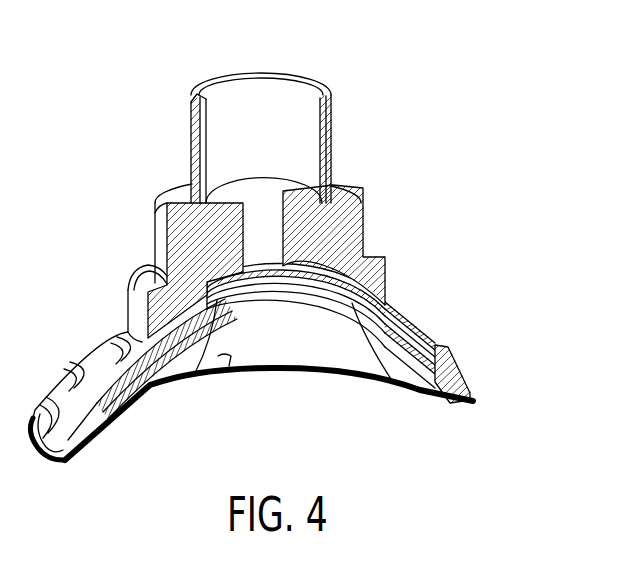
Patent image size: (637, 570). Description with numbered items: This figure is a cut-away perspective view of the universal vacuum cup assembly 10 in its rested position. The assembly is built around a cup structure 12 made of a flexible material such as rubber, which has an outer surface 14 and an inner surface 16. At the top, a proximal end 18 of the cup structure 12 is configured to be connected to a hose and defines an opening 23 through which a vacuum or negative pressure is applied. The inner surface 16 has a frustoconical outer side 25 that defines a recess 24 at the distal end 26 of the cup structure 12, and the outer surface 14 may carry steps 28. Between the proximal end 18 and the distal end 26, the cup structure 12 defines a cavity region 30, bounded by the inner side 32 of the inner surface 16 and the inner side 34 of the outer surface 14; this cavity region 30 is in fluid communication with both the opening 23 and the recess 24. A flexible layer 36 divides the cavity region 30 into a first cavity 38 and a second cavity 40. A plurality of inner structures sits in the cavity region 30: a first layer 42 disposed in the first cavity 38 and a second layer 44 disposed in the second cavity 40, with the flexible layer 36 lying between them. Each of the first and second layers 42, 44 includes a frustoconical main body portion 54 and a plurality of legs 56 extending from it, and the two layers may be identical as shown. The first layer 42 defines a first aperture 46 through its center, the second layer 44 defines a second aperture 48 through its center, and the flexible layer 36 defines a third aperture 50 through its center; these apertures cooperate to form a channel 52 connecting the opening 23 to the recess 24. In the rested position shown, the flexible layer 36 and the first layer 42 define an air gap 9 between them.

The vacuum cup assembly 10 is at (535, 323).
The cup structure 12 is at (397, 188).
The outer surface 14 is at (425, 337).
The inner surface 16 is at (372, 362).
The proximal end 18 is at (330, 107).
The opening 23 is at (258, 100).
The recess 24 is at (224, 364).
The outer side 25 is at (252, 337).
The distal end 26 is at (333, 393).
The steps 28 is at (135, 258).
The cavity region 30 is at (463, 380).
The inner side 32 is at (397, 315).
The inner side 34 is at (340, 293).
The flexible layer 36 is at (322, 262).
The first cavity 38 is at (362, 256).
The second cavity 40 is at (160, 380).
The first layer 42 is at (382, 307).
The second layer 44 is at (407, 323).
The first aperture 46 is at (268, 262).
The second aperture 48 is at (203, 357).
The third aperture 50 is at (290, 250).
The channel 52 is at (252, 292).
The frustoconical main body portion 54 is at (362, 407).
The legs 56 is at (72, 332).
The air gap 9 is at (373, 300).